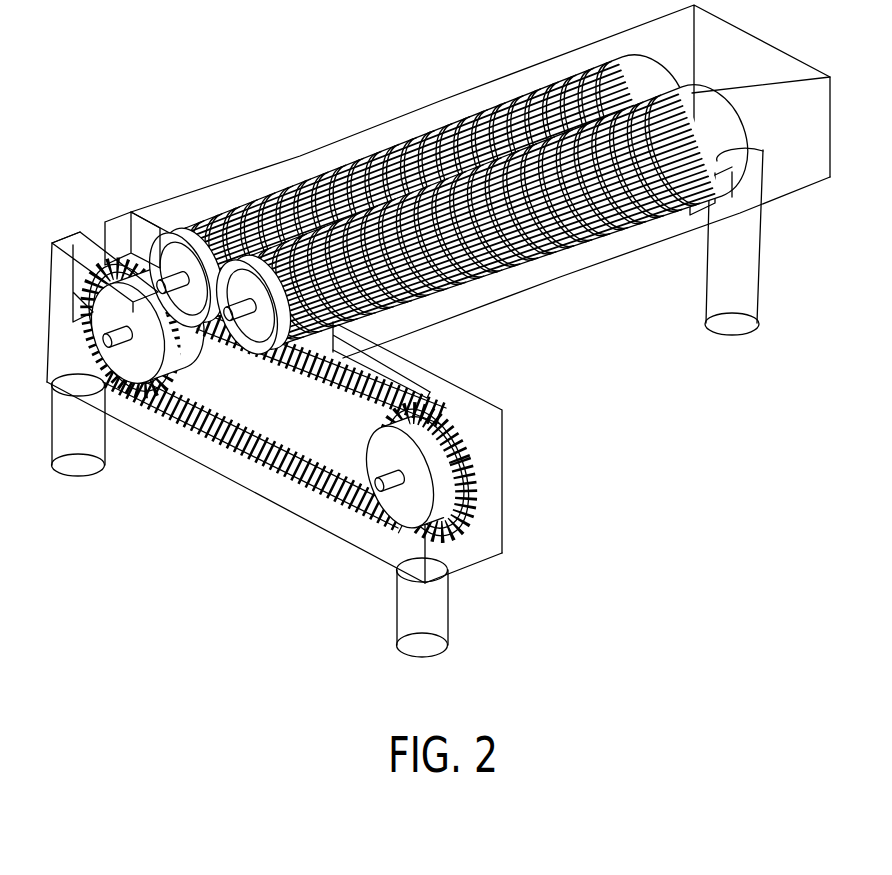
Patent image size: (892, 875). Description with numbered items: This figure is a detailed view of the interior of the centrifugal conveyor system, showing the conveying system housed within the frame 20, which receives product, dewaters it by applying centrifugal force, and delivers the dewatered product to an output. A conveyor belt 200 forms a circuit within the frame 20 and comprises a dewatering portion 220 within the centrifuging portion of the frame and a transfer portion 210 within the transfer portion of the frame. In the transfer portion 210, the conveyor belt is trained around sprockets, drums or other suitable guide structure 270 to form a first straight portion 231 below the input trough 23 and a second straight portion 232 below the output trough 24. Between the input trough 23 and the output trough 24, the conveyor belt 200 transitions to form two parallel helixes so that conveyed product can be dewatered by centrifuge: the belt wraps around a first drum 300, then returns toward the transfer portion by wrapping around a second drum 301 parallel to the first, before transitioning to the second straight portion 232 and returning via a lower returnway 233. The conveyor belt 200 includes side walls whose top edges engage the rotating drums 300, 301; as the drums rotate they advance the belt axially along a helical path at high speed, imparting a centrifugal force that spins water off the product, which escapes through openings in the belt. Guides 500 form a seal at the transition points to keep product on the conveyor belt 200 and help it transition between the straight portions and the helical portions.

The frame 20 is at (507, 477).
The input trough 23 is at (393, 360).
The output trough 24 is at (93, 230).
The conveyor belt 200 is at (290, 477).
The transfer portion 210 is at (232, 475).
The dewatering portion 220 is at (507, 260).
The first straight portion 231 is at (407, 390).
The second straight portion 232 is at (90, 267).
The lower returnway 233 is at (203, 433).
The guide structure 270 is at (193, 363).
The first drum 300 is at (285, 360).
The second drum 301 is at (183, 260).
The guides 500 is at (265, 278).